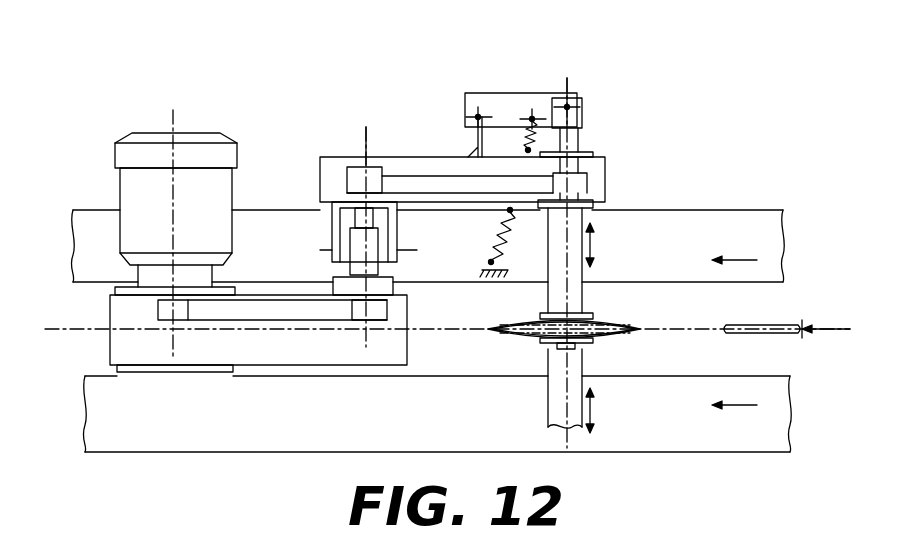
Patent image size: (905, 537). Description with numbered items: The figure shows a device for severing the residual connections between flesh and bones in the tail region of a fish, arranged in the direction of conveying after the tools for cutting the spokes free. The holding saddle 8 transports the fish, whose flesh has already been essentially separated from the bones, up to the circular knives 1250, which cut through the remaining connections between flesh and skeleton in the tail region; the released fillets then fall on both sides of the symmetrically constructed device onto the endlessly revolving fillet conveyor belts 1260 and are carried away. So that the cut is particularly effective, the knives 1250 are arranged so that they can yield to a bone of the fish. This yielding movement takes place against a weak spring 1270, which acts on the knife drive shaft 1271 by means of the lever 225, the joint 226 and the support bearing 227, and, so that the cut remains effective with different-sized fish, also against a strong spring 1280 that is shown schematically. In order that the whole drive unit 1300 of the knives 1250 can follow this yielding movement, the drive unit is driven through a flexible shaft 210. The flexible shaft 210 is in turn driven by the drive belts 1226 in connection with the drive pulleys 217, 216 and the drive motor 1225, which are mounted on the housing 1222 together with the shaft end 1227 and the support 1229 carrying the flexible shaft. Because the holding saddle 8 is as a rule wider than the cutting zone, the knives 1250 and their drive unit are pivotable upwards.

The drive motor 1225 is at (200, 153).
The housing 1222 is at (128, 345).
The drive belts 1226 is at (258, 316).
The drive pulley 217 is at (372, 315).
The drive unit 1300 is at (605, 180).
The drive pulley 216 is at (353, 168).
The flexible shaft 210 is at (332, 222).
The pin 1227 is at (378, 245).
The support 1229 is at (338, 290).
The lever 225 is at (495, 97).
The support bearing 227 is at (462, 130).
The weak spring 1270 is at (513, 122).
The joint 226 is at (580, 120).
The knife drive shaft 1271 is at (586, 140).
The strong spring 1280 is at (490, 266).
The circular knives 1250 is at (620, 319).
The fillet conveyor belts 1260 is at (713, 222).
The holding saddle 8 is at (765, 335).